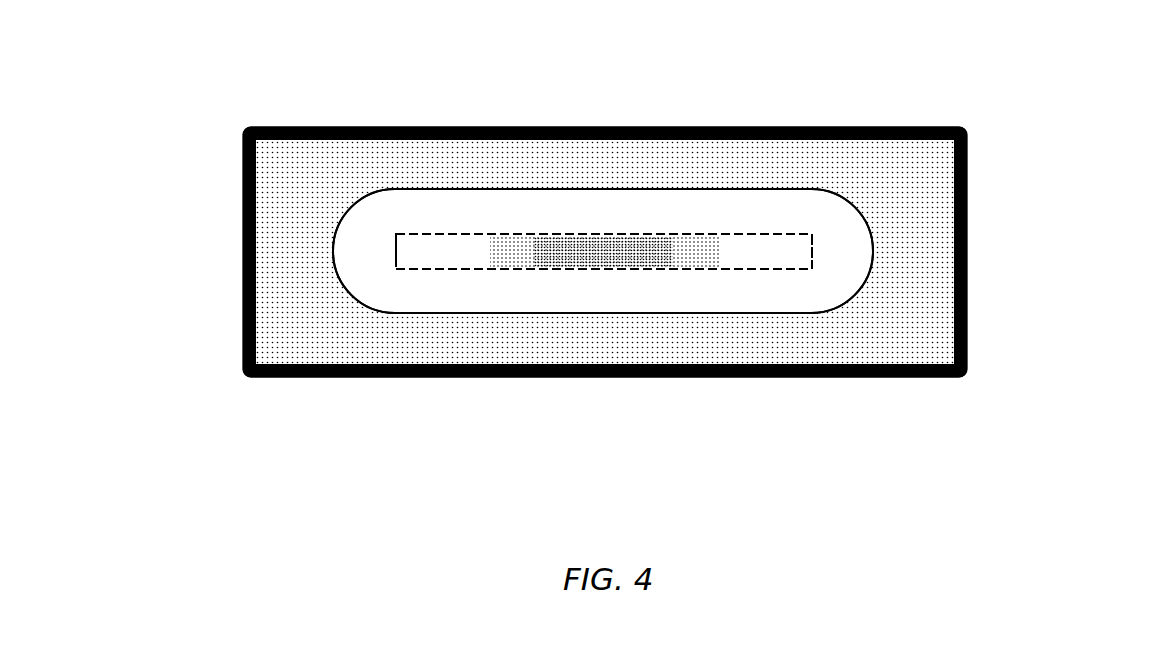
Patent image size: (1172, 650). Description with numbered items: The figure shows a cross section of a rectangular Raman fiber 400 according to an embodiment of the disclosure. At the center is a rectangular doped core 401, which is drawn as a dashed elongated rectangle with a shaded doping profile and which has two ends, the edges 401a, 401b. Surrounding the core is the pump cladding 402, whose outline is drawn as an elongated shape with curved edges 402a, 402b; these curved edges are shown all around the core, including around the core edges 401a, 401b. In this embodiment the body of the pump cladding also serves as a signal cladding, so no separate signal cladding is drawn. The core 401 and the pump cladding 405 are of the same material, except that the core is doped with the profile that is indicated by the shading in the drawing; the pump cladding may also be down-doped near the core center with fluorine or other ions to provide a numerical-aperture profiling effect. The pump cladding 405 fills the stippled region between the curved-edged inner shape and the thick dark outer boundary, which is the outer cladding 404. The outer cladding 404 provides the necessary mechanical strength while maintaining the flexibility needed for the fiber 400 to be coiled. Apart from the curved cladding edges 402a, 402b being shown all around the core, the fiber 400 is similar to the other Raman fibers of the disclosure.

The rectangular Raman fiber 400 is at (220, 347).
The rectangular doped core 401 is at (616, 251).
The core edge 401a is at (356, 258).
The core edge 401b is at (830, 258).
The pump cladding 402 is at (545, 292).
The curved edge of pump cladding 402a is at (312, 219).
The curved edge of pump cladding 402b is at (882, 212).
The outer cladding 404 is at (913, 373).
The pump cladding 405 is at (884, 331).